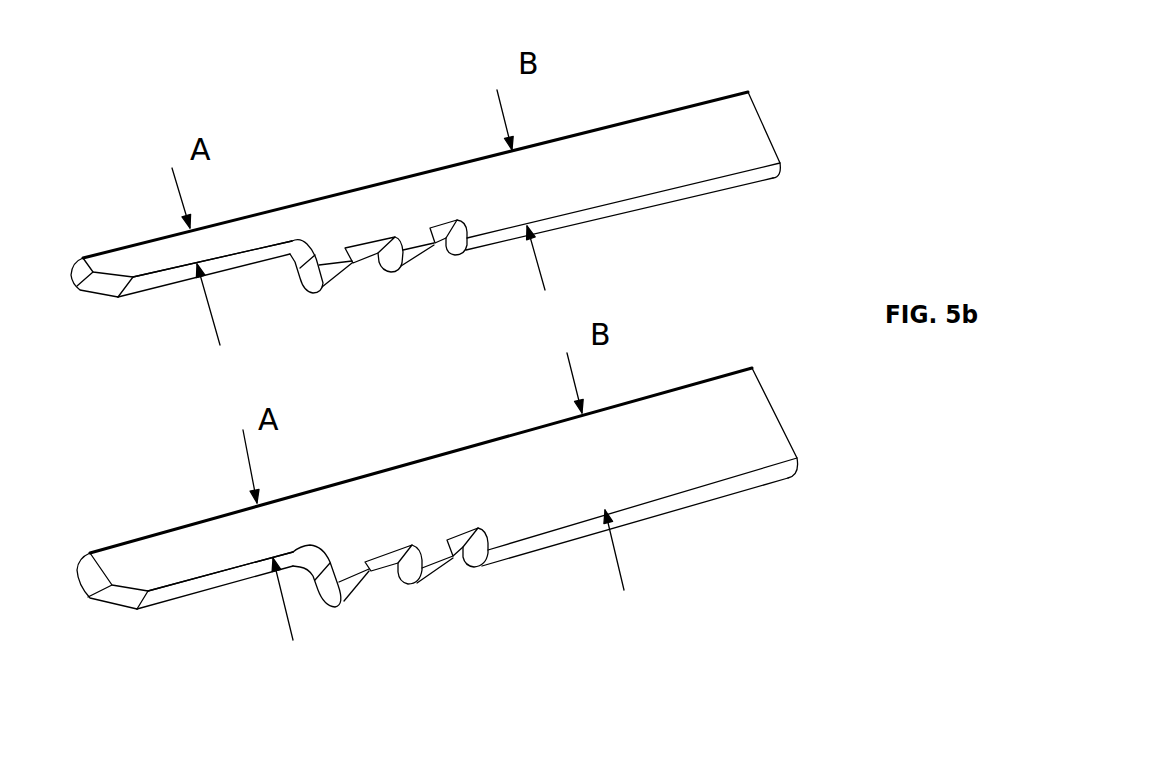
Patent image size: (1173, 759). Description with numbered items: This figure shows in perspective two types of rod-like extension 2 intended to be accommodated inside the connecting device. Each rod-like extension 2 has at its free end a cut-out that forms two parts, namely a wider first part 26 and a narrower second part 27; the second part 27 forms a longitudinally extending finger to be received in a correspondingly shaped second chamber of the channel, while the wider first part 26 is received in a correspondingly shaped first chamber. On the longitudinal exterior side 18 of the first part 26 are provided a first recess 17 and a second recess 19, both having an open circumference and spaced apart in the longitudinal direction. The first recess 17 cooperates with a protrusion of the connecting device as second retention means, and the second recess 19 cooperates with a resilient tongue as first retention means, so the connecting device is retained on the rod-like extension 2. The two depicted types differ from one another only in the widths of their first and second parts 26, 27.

The rod-like extension 2 is at (705, 120).
The first part 26 is at (605, 142).
The second part 27 is at (247, 230).
The longitudinal exterior side 18 is at (710, 188).
The second recess 19 is at (370, 267).
The first recess 17 is at (450, 258).